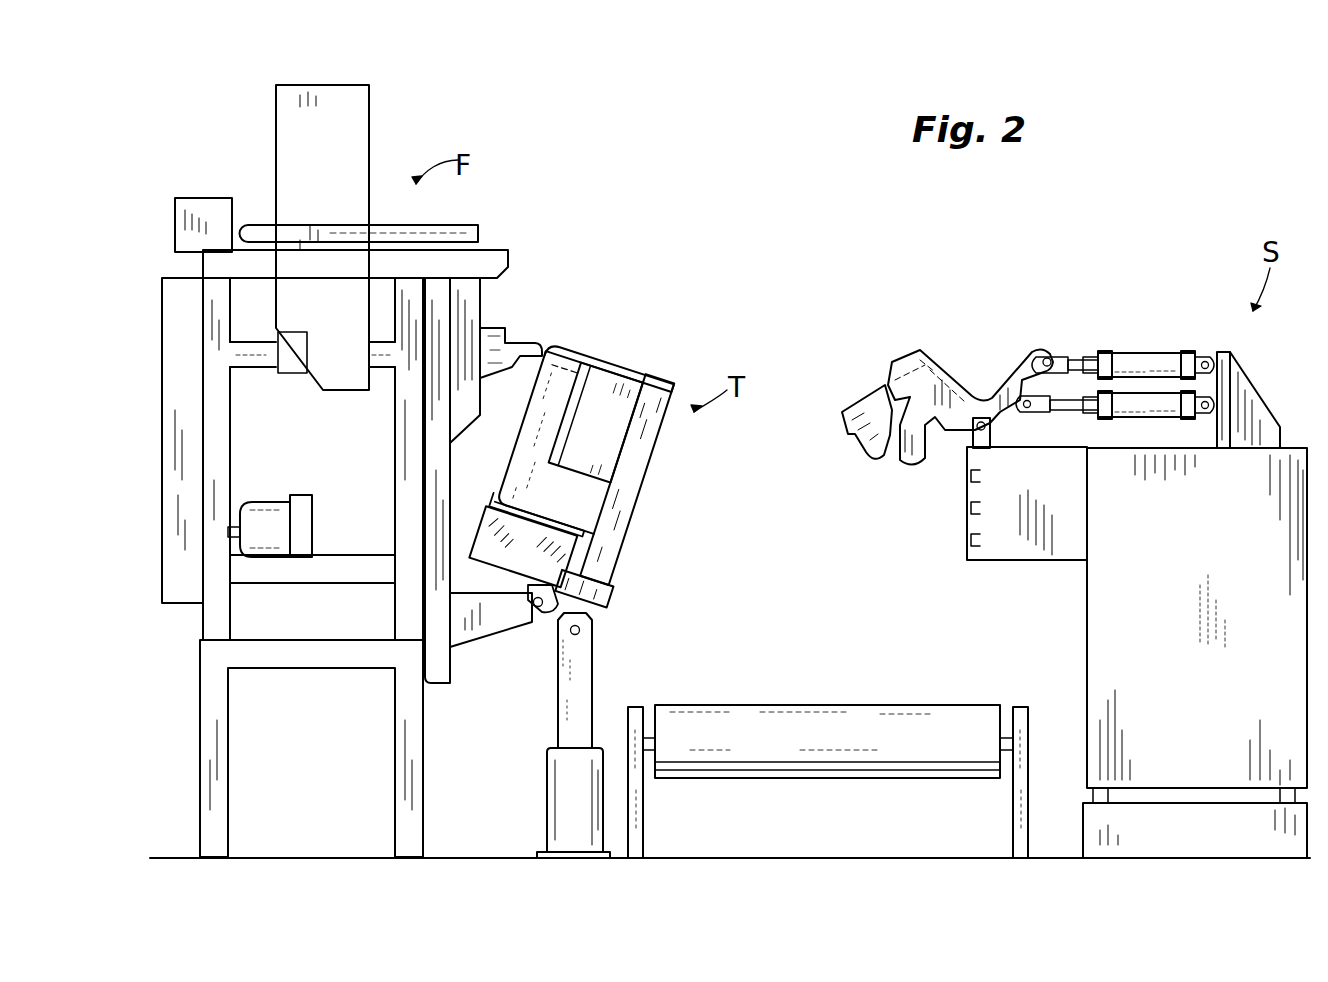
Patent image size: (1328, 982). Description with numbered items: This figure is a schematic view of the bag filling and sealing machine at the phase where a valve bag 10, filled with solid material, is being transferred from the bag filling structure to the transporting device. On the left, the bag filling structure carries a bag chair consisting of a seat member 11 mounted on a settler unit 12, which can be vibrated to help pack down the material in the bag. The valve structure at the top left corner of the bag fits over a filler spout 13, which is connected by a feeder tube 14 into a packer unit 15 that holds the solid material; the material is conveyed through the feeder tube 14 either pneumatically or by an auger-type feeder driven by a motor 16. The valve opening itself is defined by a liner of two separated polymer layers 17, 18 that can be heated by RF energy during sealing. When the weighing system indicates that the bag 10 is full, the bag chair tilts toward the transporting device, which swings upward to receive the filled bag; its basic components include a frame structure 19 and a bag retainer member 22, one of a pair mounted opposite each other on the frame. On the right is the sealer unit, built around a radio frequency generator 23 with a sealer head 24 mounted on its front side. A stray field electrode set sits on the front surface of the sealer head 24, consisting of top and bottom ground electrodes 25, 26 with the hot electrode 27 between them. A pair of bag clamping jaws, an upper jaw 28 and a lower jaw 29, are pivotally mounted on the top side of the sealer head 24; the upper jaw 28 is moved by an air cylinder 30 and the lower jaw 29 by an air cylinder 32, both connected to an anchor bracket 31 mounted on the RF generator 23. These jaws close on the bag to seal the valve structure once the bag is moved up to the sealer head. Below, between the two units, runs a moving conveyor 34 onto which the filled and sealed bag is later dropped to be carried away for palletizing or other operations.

The valve bag 10 is at (528, 442).
The seat member 11 is at (502, 492).
The settler unit 12 is at (480, 533).
The filler spout 13 is at (508, 343).
The feeder tube 14 is at (252, 367).
The packer unit 15 is at (353, 172).
The motor 16 is at (313, 523).
The liner layer 17 is at (568, 345).
The liner layer 18 is at (585, 368).
The frame structure 19 is at (623, 492).
The bag retainer member 22 is at (637, 375).
The radio frequency generator 23 is at (1277, 633).
The sealer head 24 is at (1023, 547).
The top electrode 25 is at (968, 477).
The bottom electrode 26 is at (968, 541).
The hot electrode 27 is at (968, 509).
The upper jaw 28 is at (912, 365).
The lower jaw 29 is at (865, 397).
The air cylinder 30 is at (1140, 360).
The anchor bracket 31 is at (1245, 390).
The air cylinder 32 is at (1142, 402).
The moving conveyor 34 is at (810, 715).